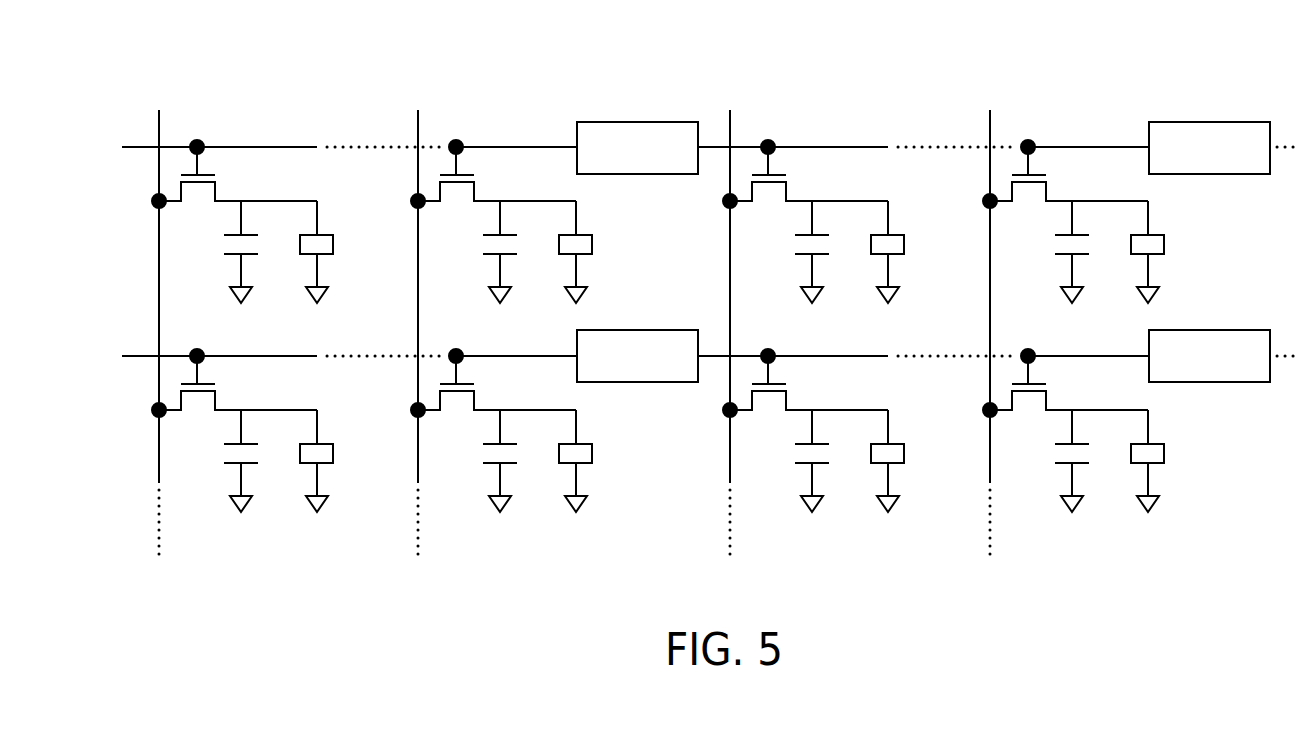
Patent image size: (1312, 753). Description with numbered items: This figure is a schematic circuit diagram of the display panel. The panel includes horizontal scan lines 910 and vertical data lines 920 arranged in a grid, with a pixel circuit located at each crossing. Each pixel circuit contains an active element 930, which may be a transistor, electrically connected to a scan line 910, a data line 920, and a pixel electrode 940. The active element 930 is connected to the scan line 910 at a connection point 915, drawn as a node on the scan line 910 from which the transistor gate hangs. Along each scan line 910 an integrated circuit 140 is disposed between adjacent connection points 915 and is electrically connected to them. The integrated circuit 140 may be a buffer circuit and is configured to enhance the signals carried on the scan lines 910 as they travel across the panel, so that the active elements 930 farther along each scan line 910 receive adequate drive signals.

The scan line 910 is at (147, 355).
The data line 920 is at (574, 305).
The connection point 915 is at (650, 246).
The active element 930 is at (659, 294).
The pixel electrode 940 is at (727, 294).
The integrated circuit 140 is at (637, 126).